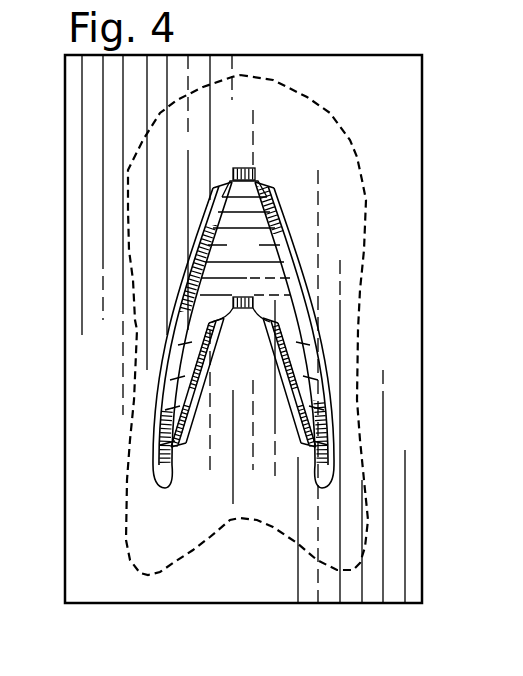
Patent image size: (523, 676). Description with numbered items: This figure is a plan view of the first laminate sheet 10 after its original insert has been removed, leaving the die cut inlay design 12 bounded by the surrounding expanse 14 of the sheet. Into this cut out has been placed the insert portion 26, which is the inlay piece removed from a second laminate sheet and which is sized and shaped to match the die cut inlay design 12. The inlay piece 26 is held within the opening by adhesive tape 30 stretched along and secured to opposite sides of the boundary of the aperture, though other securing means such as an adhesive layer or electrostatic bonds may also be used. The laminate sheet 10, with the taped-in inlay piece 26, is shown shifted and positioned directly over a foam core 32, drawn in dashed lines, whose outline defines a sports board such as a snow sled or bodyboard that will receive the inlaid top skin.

The first laminate sheet 10 is at (36, 130).
The die cut inlay design 12 is at (150, 351).
The surrounding expanse 14 is at (402, 99).
The insert portion 26 is at (258, 254).
The adhesive tape 30 is at (276, 186).
The foam core 32 is at (362, 256).